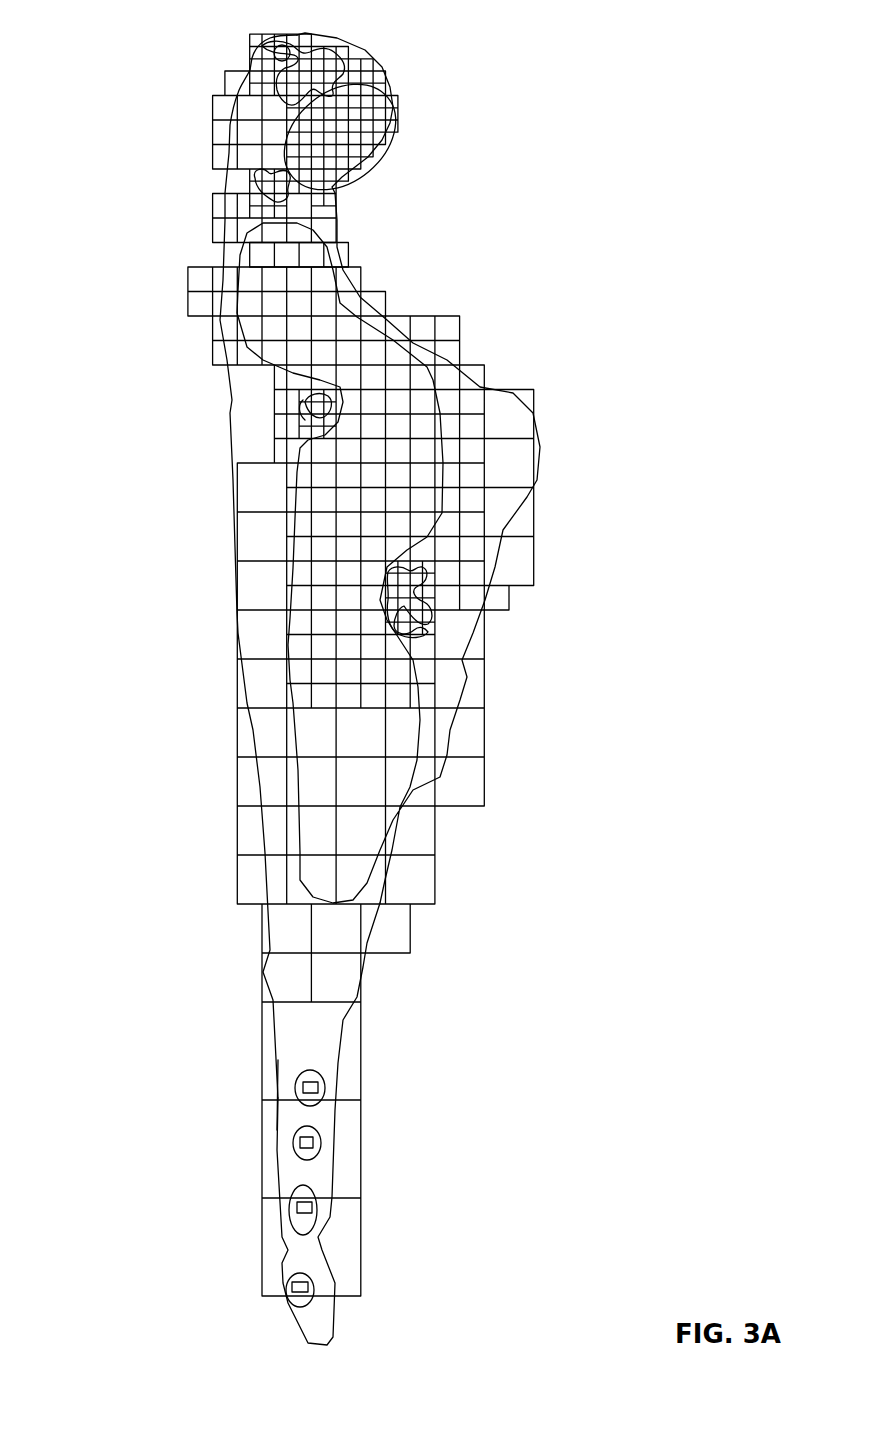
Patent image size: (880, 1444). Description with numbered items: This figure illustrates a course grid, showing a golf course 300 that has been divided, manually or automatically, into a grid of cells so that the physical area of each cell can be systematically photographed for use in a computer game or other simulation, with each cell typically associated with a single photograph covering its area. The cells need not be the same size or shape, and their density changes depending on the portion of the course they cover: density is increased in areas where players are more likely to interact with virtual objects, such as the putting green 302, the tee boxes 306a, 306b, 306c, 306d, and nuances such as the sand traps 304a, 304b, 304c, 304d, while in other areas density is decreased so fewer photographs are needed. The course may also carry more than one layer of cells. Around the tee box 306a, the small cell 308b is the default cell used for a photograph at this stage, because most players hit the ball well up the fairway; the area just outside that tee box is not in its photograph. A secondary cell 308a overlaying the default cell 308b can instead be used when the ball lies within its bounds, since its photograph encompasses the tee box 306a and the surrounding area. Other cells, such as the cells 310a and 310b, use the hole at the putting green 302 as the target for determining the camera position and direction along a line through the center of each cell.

The golf course 300 is at (130, 45).
The putting green 302 is at (343, 125).
The sand trap 304a is at (343, 62).
The sand trap 304b is at (292, 183).
The sand trap 304c is at (307, 410).
The sand trap 304d is at (432, 620).
The tee box 306a is at (323, 1090).
The tee box 306b is at (322, 1145).
The tee box 306c is at (318, 1213).
The tee box 306d is at (315, 1290).
The secondary cell 308a is at (262, 1030).
The small cell 308b is at (300, 1087).
The cell 310a is at (213, 158).
The cell 310b is at (250, 258).